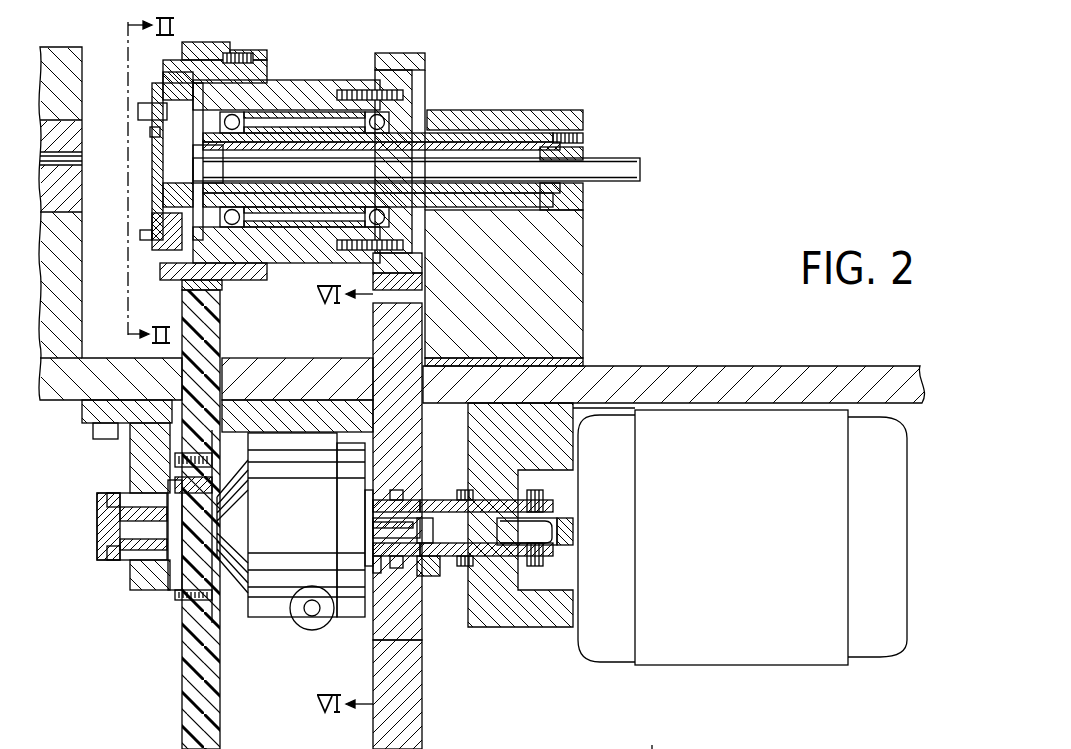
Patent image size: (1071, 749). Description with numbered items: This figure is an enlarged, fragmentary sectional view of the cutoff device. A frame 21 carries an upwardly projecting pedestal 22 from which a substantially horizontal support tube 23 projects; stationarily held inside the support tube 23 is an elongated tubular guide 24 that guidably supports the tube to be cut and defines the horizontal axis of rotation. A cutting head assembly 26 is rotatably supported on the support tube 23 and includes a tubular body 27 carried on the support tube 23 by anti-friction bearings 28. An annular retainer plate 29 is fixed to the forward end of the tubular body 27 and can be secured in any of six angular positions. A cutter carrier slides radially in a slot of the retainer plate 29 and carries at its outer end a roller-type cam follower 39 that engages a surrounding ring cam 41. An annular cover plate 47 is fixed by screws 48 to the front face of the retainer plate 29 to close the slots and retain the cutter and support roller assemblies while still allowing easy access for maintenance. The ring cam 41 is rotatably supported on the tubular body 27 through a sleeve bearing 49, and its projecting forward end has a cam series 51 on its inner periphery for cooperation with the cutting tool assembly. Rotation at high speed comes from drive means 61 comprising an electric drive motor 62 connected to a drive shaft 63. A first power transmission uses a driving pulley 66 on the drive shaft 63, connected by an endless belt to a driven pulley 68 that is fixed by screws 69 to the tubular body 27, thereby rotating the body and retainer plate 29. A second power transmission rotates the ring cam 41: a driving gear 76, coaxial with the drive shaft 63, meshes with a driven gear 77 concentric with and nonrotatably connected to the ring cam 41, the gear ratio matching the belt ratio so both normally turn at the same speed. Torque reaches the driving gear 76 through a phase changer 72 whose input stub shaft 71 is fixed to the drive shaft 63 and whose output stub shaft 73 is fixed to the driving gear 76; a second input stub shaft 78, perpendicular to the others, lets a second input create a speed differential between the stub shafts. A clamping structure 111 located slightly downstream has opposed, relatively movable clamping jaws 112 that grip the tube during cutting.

The frame 21 is at (660, 378).
The pedestal 22 is at (573, 272).
The support tube 23 is at (493, 133).
The tubular guide 24 is at (608, 157).
The cutting head assembly 26 is at (317, 60).
The tubular body 27 is at (293, 95).
The anti-friction bearings 28 is at (383, 118).
The retainer plate 29 is at (167, 231).
The cam follower 39 is at (652, 736).
The ring cam 41 is at (195, 43).
The cover plate 47 is at (177, 113).
The screws 48 is at (138, 110).
The sleeve bearing 49 is at (244, 53).
The cam series 51 is at (558, 740).
The drive means 61 is at (490, 613).
The electric drive motor 62 is at (757, 650).
The drive shaft 63 is at (450, 500).
The driving pulley 66 is at (383, 723).
The driven pulley 68 is at (399, 62).
The screws 69 is at (345, 90).
The input stub shaft 71 is at (396, 556).
The phase changer 72 is at (270, 600).
The output stub shaft 73 is at (160, 560).
The driving gear 76 is at (197, 687).
The driven gear 77 is at (214, 58).
The second input stub shaft 78 is at (308, 615).
The clamping structure 111 is at (73, 47).
The clamping jaws 112 is at (80, 148).